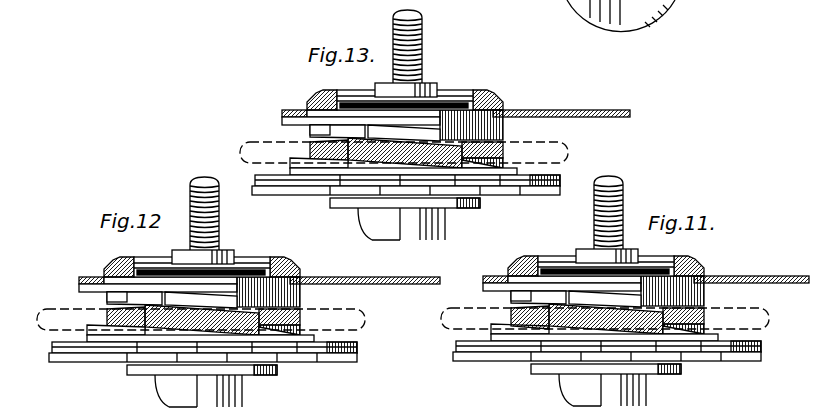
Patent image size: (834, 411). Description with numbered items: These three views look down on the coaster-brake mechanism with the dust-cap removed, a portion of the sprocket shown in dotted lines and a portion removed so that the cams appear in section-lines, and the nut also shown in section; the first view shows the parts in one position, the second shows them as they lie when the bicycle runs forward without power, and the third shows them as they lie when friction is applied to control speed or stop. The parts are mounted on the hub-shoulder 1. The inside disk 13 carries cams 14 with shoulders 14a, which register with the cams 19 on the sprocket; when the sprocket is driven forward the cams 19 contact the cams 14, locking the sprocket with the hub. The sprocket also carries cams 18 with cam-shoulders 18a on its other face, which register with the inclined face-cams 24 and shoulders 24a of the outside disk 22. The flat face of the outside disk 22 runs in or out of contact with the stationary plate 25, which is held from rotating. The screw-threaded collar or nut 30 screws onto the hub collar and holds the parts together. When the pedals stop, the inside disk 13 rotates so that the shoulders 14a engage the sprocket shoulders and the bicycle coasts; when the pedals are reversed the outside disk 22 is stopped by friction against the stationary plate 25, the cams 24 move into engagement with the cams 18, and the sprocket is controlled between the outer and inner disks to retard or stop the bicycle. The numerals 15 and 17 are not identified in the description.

In FIG. 13, the hub-shoulder 1 is at (268, 190).
In FIG. 12, the hub-shoulder 1 is at (215, 353).
In FIG. 11, the hub-shoulder 1 is at (595, 355).
In FIG. 13, the inside disk 13 is at (553, 178).
In FIG. 12, the inside disk 13 is at (190, 343).
In FIG. 11, the inside disk 13 is at (608, 359).
In FIG. 13, the cams 14 is at (367, 163).
In FIG. 12, the cams 14 is at (287, 356).
In FIG. 11, the cams 14 is at (623, 360).
In FIG. 12, the shoulders 14a is at (115, 356).
In FIG. 11, the shoulders 14a is at (501, 353).
In FIG. 13, the ring plate 15 is at (517, 172).
In FIG. 12, the ring plate 15 is at (215, 333).
In FIG. 11, the ring plate 15 is at (604, 337).
In FIG. 13, the housing outline 17 is at (404, 152).
In FIG. 12, the housing outline 17 is at (211, 319).
In FIG. 11, the housing outline 17 is at (602, 321).
In FIG. 13, the cams 18 is at (327, 160).
In FIG. 12, the cams 18 is at (214, 353).
In FIG. 11, the cams 18 is at (607, 282).
In FIG. 12, the cam-shoulders 18a is at (100, 345).
In FIG. 13, the cams 19 is at (330, 185).
In FIG. 12, the cams 19 is at (236, 379).
In FIG. 11, the cams 19 is at (594, 378).
In FIG. 13, the outside disk 22 is at (540, 112).
In FIG. 12, the outside disk 22 is at (138, 288).
In FIG. 11, the outside disk 22 is at (562, 283).
In FIG. 13, the inclined face-cams 24 is at (435, 128).
In FIG. 12, the inclined face-cams 24 is at (203, 270).
In FIG. 11, the inclined face-cams 24 is at (609, 266).
In FIG. 13, the shoulders 24a is at (415, 88).
In FIG. 12, the shoulders 24a is at (190, 237).
In FIG. 11, the shoulders 24a is at (607, 219).
In FIG. 13, the stationary plate 25 is at (598, 112).
In FIG. 12, the stationary plate 25 is at (365, 273).
In FIG. 11, the stationary plate 25 is at (751, 268).
In FIG. 13, the screw-threaded collar or nut 30 is at (495, 98).
In FIG. 12, the screw-threaded collar or nut 30 is at (211, 263).
In FIG. 11, the screw-threaded collar or nut 30 is at (616, 263).